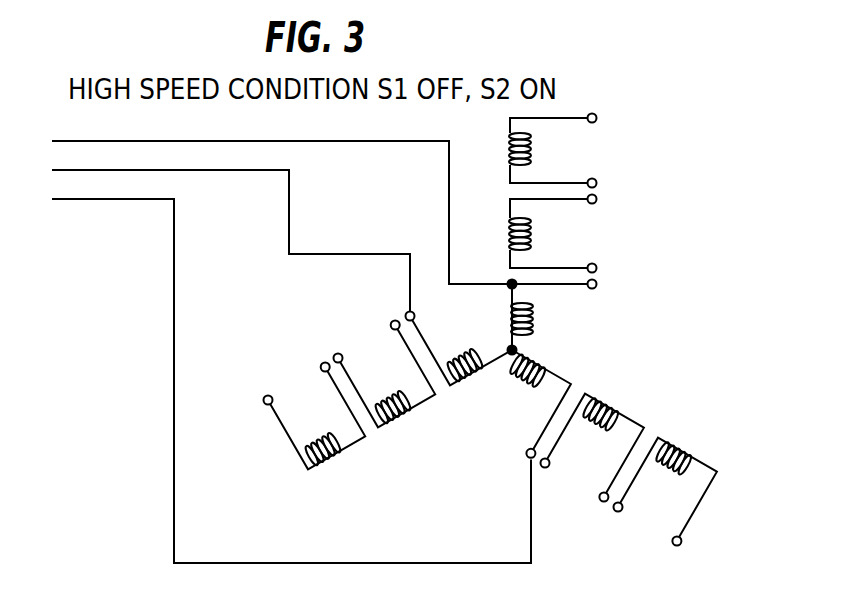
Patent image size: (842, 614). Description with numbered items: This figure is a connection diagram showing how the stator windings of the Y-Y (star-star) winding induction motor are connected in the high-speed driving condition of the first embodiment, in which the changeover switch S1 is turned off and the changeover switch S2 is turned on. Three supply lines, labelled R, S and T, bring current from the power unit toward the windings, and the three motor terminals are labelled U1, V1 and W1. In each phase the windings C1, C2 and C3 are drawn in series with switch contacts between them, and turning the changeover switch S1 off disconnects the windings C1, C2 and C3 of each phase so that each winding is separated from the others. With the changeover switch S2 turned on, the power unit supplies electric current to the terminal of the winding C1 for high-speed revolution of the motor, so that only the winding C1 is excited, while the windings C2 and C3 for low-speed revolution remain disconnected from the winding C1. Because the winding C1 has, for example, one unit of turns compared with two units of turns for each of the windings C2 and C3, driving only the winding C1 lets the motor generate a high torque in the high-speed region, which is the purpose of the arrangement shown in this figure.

The power supply phase R line R is at (315, 237).
The power supply phase S line S is at (221, 233).
The power supply phase T line T is at (281, 374).
The motor terminal U1 is at (571, 120).
The motor terminal V1 is at (251, 403).
The motor terminal W1 is at (699, 547).
The winding for high-speed revolution of motor C1 is at (494, 380).
The winding for low-speed revolution of motor C2 is at (495, 348).
The winding for low-speed revolution of motor C3 is at (499, 335).